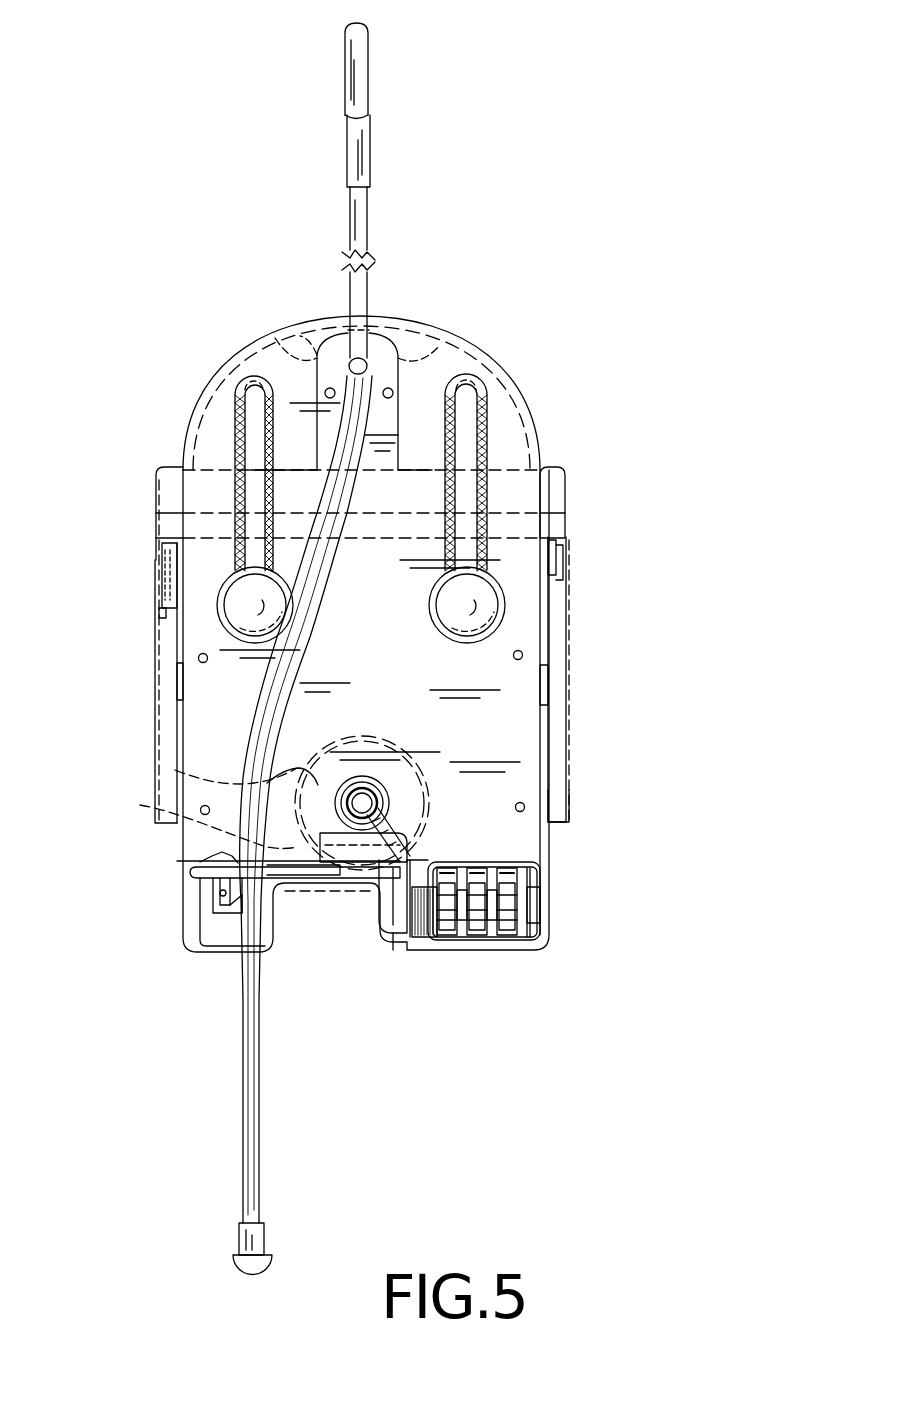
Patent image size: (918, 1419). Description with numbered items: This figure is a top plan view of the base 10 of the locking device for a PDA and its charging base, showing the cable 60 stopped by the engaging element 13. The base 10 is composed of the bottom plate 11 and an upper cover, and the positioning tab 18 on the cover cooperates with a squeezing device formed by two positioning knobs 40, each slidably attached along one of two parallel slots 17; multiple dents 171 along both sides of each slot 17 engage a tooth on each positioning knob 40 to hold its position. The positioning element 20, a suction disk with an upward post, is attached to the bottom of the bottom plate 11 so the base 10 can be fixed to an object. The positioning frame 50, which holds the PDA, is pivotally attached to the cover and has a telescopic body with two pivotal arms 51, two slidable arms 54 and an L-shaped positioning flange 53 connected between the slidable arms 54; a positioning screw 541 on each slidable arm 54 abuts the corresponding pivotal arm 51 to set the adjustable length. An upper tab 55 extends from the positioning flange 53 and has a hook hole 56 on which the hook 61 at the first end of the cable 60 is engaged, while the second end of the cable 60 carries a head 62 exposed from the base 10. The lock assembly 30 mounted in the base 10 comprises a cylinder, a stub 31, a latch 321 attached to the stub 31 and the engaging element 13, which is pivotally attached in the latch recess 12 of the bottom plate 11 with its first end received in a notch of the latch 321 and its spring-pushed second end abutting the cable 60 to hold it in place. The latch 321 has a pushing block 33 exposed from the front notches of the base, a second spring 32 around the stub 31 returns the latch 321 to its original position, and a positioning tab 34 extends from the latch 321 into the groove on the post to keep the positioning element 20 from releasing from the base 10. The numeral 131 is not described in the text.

The base 10 is at (178, 383).
The bottom plate 11 is at (528, 715).
The latch recess 12 is at (200, 905).
The engaging element 13 is at (237, 930).
The slide bar 131 is at (232, 875).
The slot 17 is at (468, 413).
The dents 171 is at (482, 440).
The positioning tab 18 is at (140, 805).
The positioning element 20 is at (175, 770).
The lock assembly 30 is at (548, 970).
The stub 31 is at (436, 932).
The second spring 32 is at (420, 920).
The latch 321 is at (368, 908).
The pushing block 33 is at (395, 945).
The positioning tab 34 is at (400, 832).
The positioning knob 40 is at (222, 601).
The positioning frame 50 is at (595, 623).
The pivotal arm 51 is at (565, 805).
The positioning flange 53 is at (180, 527).
The slidable arm 54 is at (550, 556).
The positioning screw 541 is at (550, 688).
The upper tab 55 is at (282, 355).
The hook hole 56 is at (440, 335).
The cable 60 is at (246, 1025).
The hook 61 is at (360, 65).
The head 62 is at (260, 1272).